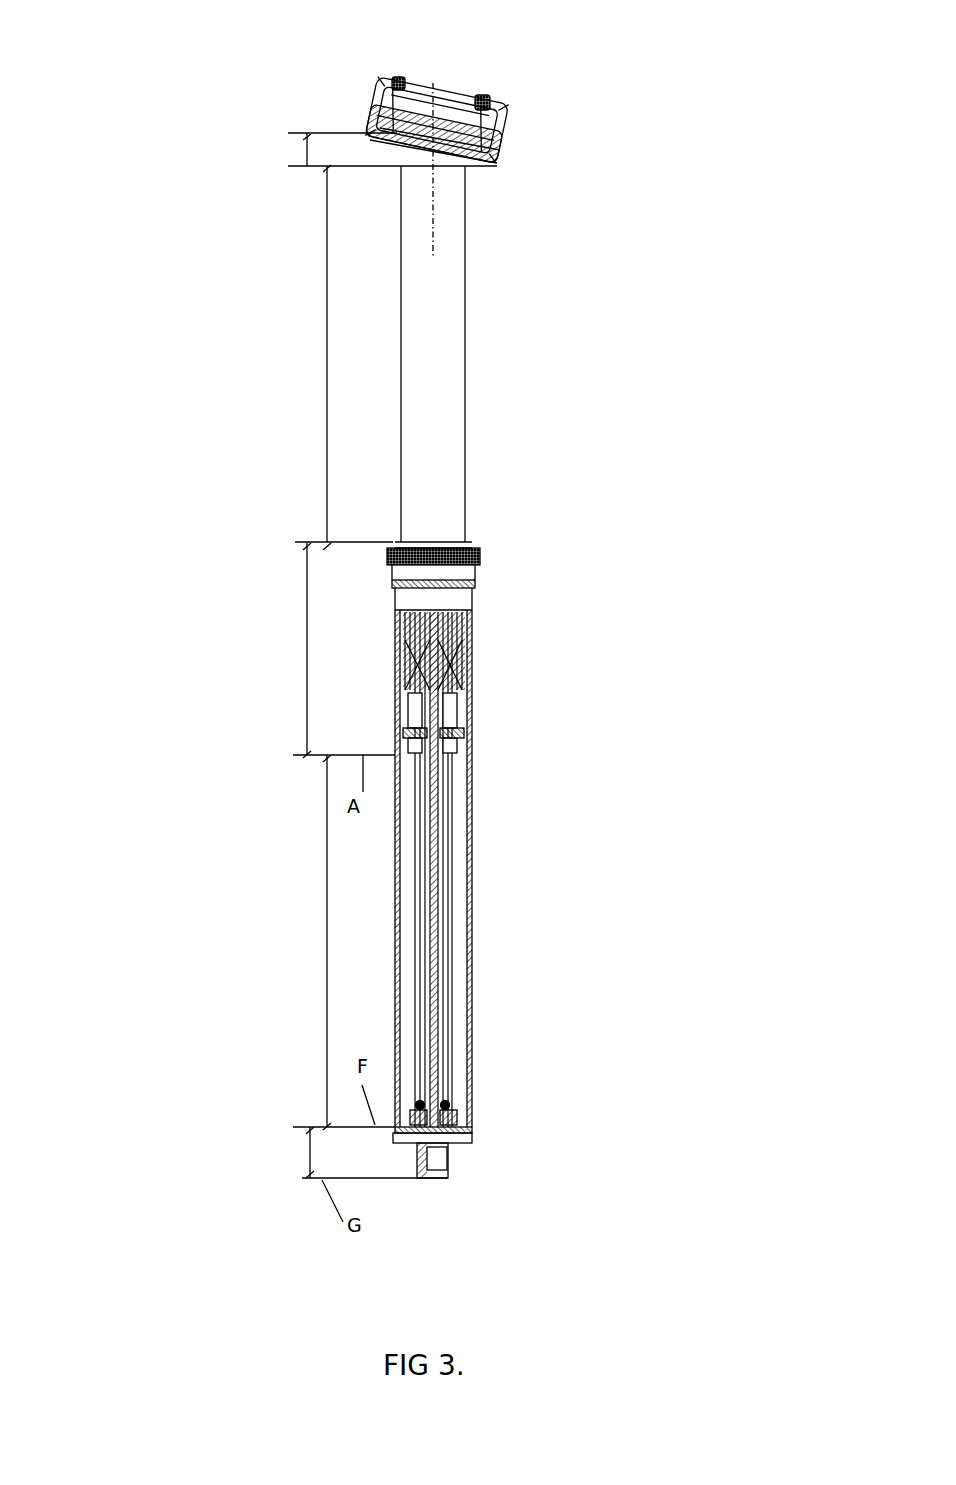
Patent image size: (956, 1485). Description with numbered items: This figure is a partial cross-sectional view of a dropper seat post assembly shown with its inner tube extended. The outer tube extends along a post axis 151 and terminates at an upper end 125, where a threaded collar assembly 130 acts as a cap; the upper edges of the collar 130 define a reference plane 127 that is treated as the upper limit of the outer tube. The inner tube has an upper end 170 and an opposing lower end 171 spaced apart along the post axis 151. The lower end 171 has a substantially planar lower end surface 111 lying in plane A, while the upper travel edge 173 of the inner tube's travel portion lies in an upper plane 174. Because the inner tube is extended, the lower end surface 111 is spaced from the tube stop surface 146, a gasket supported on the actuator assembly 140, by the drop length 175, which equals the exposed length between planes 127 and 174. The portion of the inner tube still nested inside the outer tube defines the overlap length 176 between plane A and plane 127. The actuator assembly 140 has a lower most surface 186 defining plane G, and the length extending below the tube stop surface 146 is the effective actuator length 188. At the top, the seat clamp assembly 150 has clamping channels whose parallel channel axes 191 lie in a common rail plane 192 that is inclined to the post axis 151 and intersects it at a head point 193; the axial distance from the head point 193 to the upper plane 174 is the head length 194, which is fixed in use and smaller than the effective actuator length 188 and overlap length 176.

The seat clamp assembly 150 is at (469, 75).
The channel axis 191 is at (352, 103).
The rail plane 192 is at (372, 108).
The head point 193 is at (437, 135).
The upper travel edge 173 is at (450, 168).
The upper plane 174 is at (375, 168).
The head length 194 is at (303, 148).
The upper end of the inner tube 170 is at (479, 203).
The post axis 151 is at (437, 228).
The drop length 175 is at (327, 510).
The overlap length 176 is at (305, 713).
The reference plane 127 is at (352, 543).
The collar assembly 130 is at (465, 568).
The lower end of the inner tube 171 is at (498, 735).
The lower end surface 111 is at (465, 756).
The tube stop surface 146 is at (462, 1122).
The upper end of the outer tube 125 is at (475, 1128).
The actuator assembly 140 is at (450, 1147).
The lower most surface 186 is at (425, 1182).
The effective actuator length 188 is at (307, 1160).